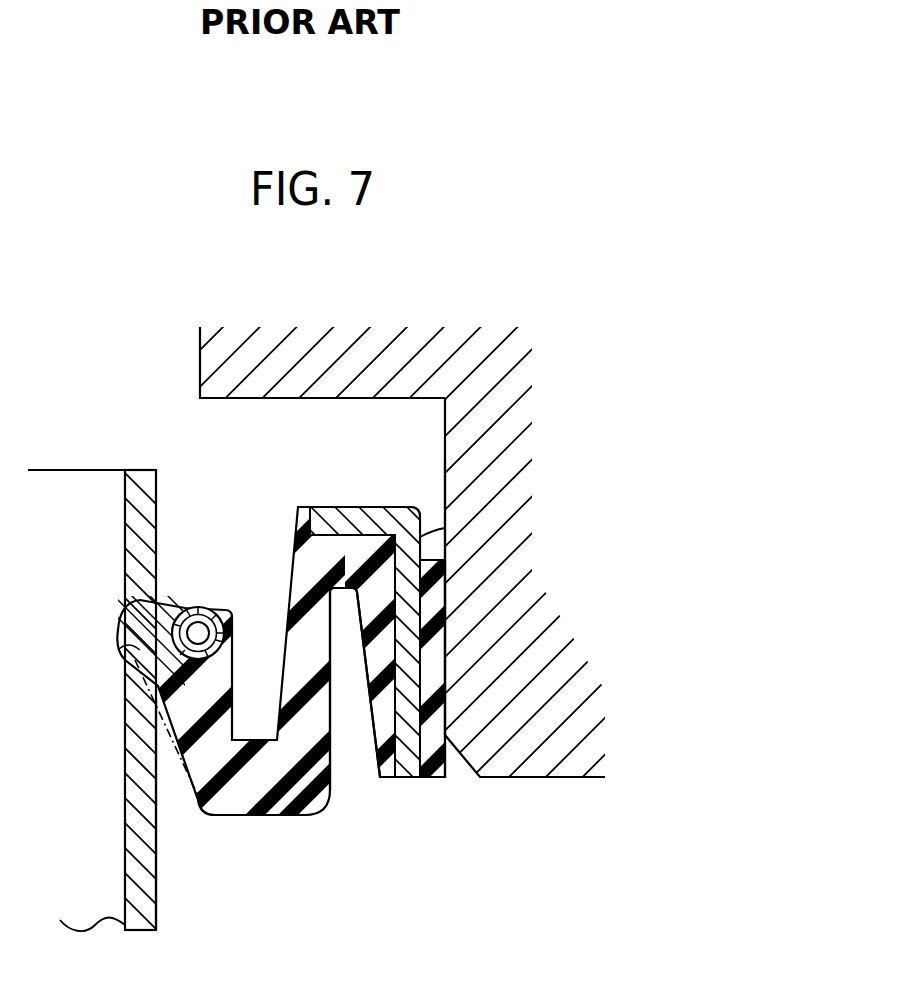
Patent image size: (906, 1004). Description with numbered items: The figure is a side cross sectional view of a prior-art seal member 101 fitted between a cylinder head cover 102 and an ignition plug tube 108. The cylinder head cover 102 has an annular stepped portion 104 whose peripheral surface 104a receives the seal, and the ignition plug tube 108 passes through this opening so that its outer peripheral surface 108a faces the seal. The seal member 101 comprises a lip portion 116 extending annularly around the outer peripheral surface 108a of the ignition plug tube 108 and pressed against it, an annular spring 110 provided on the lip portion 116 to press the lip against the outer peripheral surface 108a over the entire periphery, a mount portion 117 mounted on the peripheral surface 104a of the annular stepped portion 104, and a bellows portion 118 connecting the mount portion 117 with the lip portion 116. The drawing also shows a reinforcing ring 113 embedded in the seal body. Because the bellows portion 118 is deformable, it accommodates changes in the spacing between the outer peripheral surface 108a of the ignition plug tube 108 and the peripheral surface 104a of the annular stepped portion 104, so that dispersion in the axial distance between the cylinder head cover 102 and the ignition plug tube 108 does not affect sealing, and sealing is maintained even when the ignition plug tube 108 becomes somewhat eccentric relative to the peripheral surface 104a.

The seal member 101 is at (280, 536).
The cylinder head cover 102 is at (411, 326).
The annular stepped portion 104 is at (430, 405).
The peripheral surface 104a is at (445, 487).
The ignition plug tube 108 is at (125, 793).
The outer peripheral surface 108a is at (168, 886).
The annular spring 110 is at (170, 608).
The metal ring (reinforcing ring) 113 is at (358, 508).
The lip portion 116 is at (168, 650).
The mount portion 117 is at (440, 779).
The bellows portion 118 is at (318, 707).